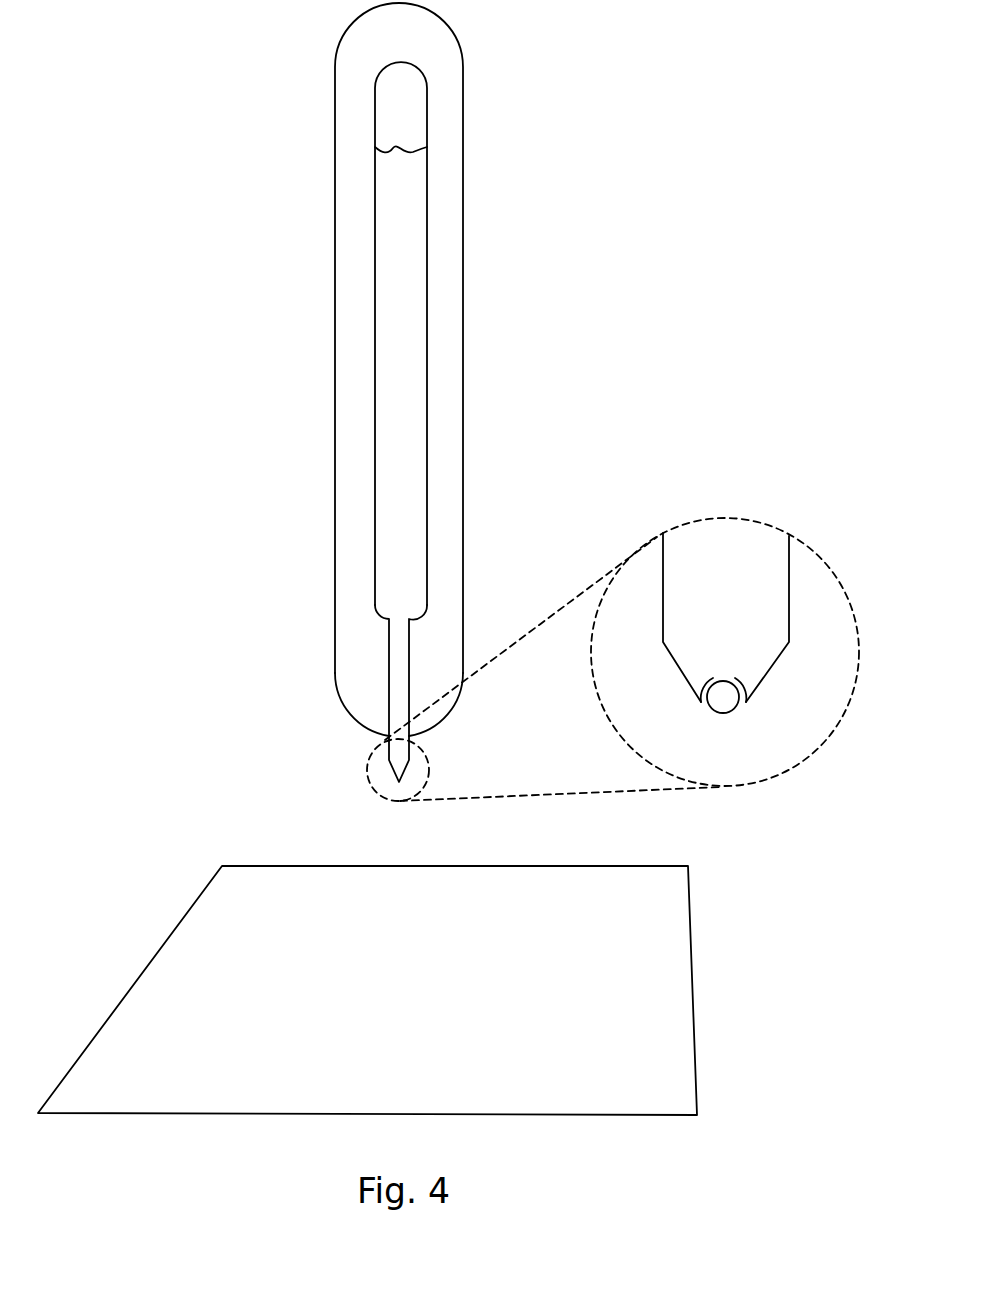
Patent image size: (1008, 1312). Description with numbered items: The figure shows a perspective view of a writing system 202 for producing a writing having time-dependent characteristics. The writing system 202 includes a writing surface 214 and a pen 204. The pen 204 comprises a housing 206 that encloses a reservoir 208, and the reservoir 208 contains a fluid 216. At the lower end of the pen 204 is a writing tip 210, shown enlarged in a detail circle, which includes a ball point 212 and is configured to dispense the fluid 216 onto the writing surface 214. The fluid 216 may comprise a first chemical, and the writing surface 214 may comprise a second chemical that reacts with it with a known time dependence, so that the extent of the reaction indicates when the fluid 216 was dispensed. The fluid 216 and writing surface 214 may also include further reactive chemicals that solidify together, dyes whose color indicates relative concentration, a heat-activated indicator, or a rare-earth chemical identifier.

The writing system 202 is at (740, 170).
The pen 204 is at (260, 205).
The housing 206 is at (463, 260).
The reservoir 208 is at (427, 338).
The writing tip 210 is at (789, 580).
The ball point 212 is at (735, 710).
The writing surface 214 is at (254, 936).
The fluid 216 is at (397, 432).